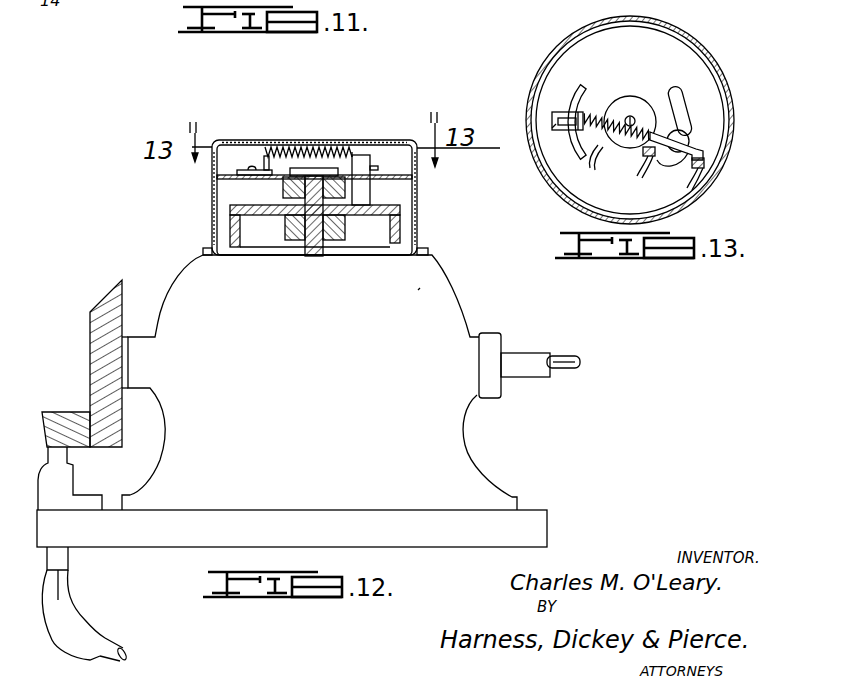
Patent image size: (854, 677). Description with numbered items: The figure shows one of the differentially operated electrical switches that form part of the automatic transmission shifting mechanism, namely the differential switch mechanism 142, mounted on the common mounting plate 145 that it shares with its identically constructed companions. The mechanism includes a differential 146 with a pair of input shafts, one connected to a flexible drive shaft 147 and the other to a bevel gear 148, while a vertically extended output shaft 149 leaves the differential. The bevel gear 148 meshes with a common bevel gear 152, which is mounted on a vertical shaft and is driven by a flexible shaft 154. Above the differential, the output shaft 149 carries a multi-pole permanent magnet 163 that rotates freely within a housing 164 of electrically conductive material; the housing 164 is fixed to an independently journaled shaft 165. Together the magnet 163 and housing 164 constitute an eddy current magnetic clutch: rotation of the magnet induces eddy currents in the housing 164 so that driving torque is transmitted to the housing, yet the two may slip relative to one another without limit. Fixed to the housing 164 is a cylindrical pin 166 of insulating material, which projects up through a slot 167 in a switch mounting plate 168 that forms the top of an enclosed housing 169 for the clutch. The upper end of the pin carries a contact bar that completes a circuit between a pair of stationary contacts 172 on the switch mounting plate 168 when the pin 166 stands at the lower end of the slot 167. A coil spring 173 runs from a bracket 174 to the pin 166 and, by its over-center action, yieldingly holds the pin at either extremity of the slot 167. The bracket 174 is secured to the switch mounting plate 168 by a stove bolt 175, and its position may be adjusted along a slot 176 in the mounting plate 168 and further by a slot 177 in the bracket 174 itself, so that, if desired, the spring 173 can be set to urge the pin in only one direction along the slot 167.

In FIG. 12, the differential switch mechanism 142 is at (468, 300).
In FIG. 12, the mounting plate 145 is at (535, 525).
In FIG. 12, the differential 146 is at (418, 290).
In FIG. 12, the flexible drive shaft 147 is at (578, 356).
In FIG. 12, the bevel gear 148 is at (103, 295).
In FIG. 12, the output shaft 149 is at (312, 248).
In FIG. 12, the common bevel gear 152 is at (63, 412).
In FIG. 12, the flexible shaft 154 is at (120, 655).
In FIG. 12, the multi-pole permanent magnet 163 is at (378, 241).
In FIG. 12, the housing 164 is at (400, 222).
In FIG. 12, the independently journaled shaft 165 is at (283, 190).
In FIG. 12, the cylindrical pin 166 is at (370, 196).
In FIG. 13, the cylindrical pin 166 is at (688, 130).
In FIG. 13, the slot 167 is at (685, 100).
In FIG. 12, the switch mounting plate 168 is at (237, 170).
In FIG. 13, the switch mounting plate 168 is at (677, 50).
In FIG. 12, the enclosed housing 169 is at (212, 215).
In FIG. 13, the stationary contacts 172 is at (670, 173).
In FIG. 12, the coil spring 173 is at (330, 152).
In FIG. 13, the coil spring 173 is at (607, 163).
In FIG. 12, the bracket 174 is at (283, 150).
In FIG. 13, the bracket 174 is at (594, 110).
In FIG. 13, the stove bolt 175 is at (557, 127).
In FIG. 13, the slot 176 is at (579, 88).
In FIG. 13, the slot 177 is at (556, 112).